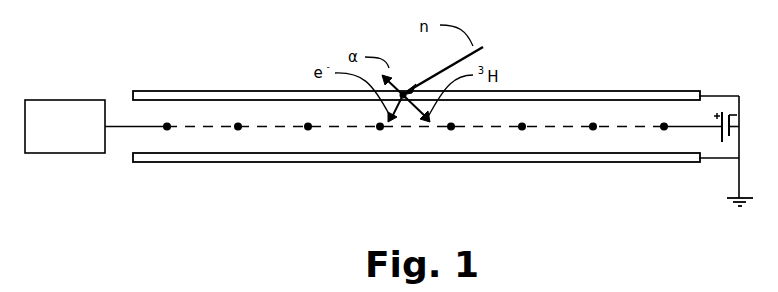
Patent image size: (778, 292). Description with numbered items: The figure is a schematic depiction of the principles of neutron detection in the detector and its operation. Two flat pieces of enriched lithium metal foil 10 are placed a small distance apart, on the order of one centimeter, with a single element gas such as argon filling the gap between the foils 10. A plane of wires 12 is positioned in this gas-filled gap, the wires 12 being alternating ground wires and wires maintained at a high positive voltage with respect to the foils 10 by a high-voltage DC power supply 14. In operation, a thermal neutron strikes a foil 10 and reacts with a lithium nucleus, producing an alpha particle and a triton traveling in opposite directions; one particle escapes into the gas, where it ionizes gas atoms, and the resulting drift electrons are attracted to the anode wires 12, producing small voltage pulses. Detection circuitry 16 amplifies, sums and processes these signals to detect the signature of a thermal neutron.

The lithium metal foil 10 is at (268, 90).
The plane of wires 12 is at (237, 122).
The high-voltage DC power supply 14 is at (722, 110).
The detection circuitry 16 is at (65, 126).